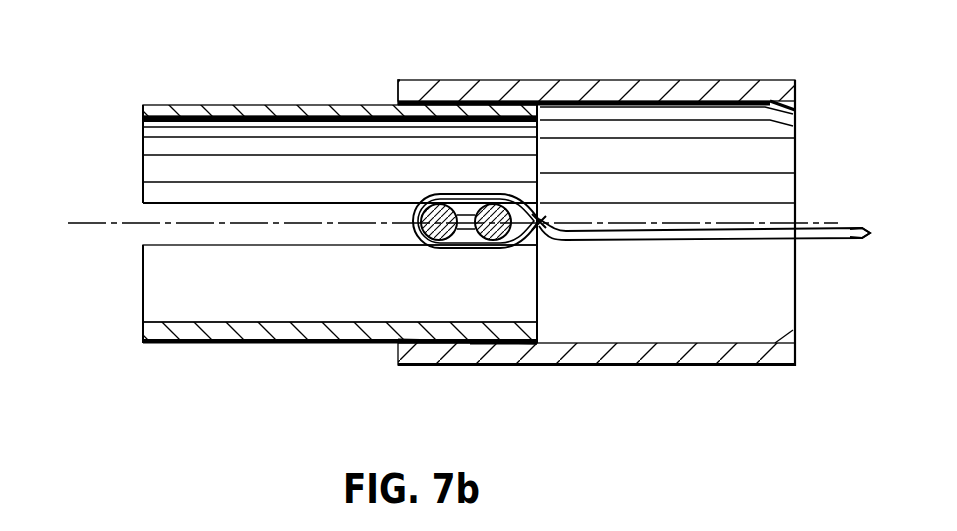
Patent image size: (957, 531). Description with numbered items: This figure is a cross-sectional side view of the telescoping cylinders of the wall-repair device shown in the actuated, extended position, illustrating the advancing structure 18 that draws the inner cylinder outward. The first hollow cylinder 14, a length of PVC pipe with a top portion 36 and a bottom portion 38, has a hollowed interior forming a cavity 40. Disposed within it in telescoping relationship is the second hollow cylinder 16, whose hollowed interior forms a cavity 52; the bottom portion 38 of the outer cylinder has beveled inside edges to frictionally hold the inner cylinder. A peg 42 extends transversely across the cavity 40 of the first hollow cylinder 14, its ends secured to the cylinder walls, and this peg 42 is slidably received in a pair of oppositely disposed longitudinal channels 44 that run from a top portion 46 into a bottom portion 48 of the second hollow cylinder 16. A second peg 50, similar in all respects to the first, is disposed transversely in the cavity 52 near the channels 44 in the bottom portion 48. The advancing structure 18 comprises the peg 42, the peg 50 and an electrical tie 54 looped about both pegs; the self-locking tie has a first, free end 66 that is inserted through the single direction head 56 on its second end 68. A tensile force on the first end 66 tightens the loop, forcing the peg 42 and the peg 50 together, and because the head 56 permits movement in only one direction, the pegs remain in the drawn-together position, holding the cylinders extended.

The first hollow cylinder 14 is at (643, 85).
The second hollow cylinder 16 is at (223, 108).
The advancing structure 18 is at (597, 211).
The top portion 36 is at (428, 82).
The bottom portion 38 is at (780, 82).
The cavity 40 is at (746, 156).
The peg 42 is at (435, 250).
The longitudinal channels 44 is at (109, 154).
The top portion 46 is at (165, 344).
The bottom portion 48 is at (460, 366).
The peg 50 is at (500, 366).
The cavity 52 is at (182, 289).
The electrical tie 54 is at (440, 196).
The single direction head 56 is at (546, 214).
The first end 66 is at (845, 228).
The second end 68 is at (494, 204).